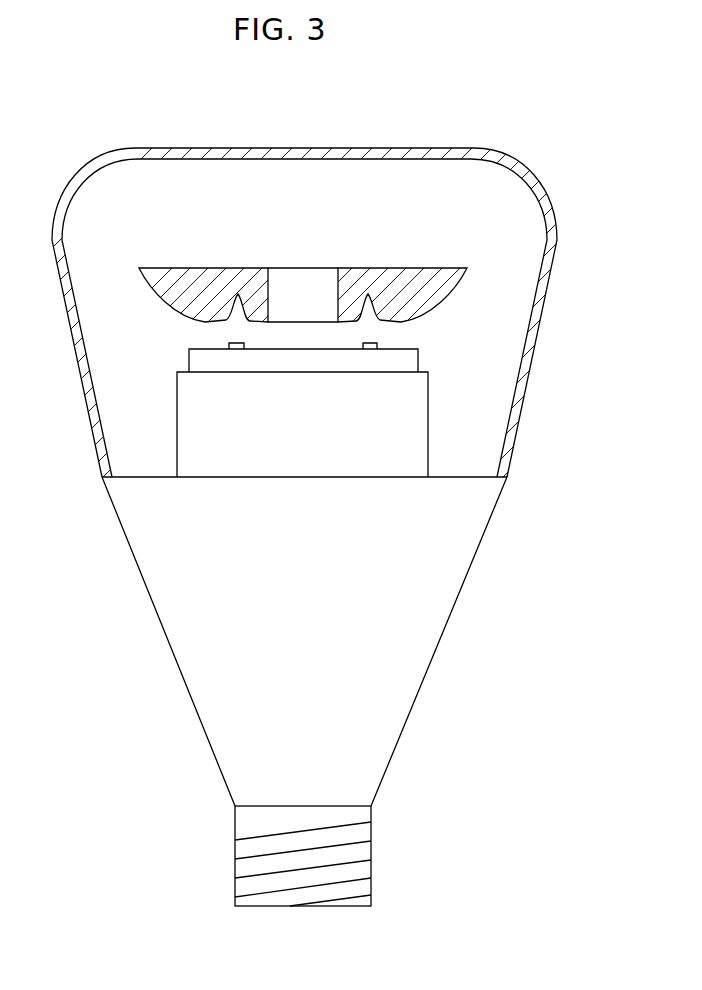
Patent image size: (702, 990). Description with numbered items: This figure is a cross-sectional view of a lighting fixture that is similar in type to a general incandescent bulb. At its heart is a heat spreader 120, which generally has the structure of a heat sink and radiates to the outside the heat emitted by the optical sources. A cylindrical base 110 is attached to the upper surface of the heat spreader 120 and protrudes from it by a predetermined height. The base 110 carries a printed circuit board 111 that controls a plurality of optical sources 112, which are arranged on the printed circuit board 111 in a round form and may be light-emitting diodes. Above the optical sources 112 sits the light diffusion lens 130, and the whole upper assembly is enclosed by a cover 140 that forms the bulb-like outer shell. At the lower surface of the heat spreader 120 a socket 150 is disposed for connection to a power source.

The base 110 is at (418, 424).
The printed circuit board 111 is at (418, 357).
The optical sources 112 is at (377, 347).
The heat spreader 120 is at (433, 618).
The light diffusion lens 130 is at (165, 264).
The cover 140 is at (310, 148).
The socket 150 is at (371, 862).